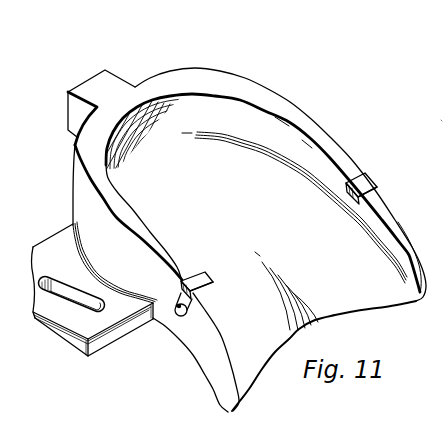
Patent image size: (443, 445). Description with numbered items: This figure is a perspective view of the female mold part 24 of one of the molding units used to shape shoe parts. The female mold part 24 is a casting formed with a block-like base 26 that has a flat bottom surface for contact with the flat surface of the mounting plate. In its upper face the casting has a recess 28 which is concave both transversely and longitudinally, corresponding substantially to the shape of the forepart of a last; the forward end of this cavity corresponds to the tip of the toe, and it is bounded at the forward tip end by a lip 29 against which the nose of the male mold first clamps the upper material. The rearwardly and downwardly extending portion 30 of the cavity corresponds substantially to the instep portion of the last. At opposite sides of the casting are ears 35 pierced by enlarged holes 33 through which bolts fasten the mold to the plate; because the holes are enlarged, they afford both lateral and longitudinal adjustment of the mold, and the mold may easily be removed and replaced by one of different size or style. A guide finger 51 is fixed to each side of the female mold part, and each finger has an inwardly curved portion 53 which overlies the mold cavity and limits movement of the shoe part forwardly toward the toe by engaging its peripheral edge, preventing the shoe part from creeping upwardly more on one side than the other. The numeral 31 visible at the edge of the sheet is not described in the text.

The female mold part 24 is at (312, 118).
The block-like base 26 is at (140, 285).
The recess 28 is at (225, 98).
The lip 29 is at (146, 100).
The rearwardly and downwardly extending portion 30 is at (362, 298).
The adjacent part 31 is at (431, 125).
The enlarged holes 33 is at (53, 278).
The ears 35 is at (70, 319).
The guide finger 51 is at (180, 277).
The inwardly curved portion 53 is at (213, 275).